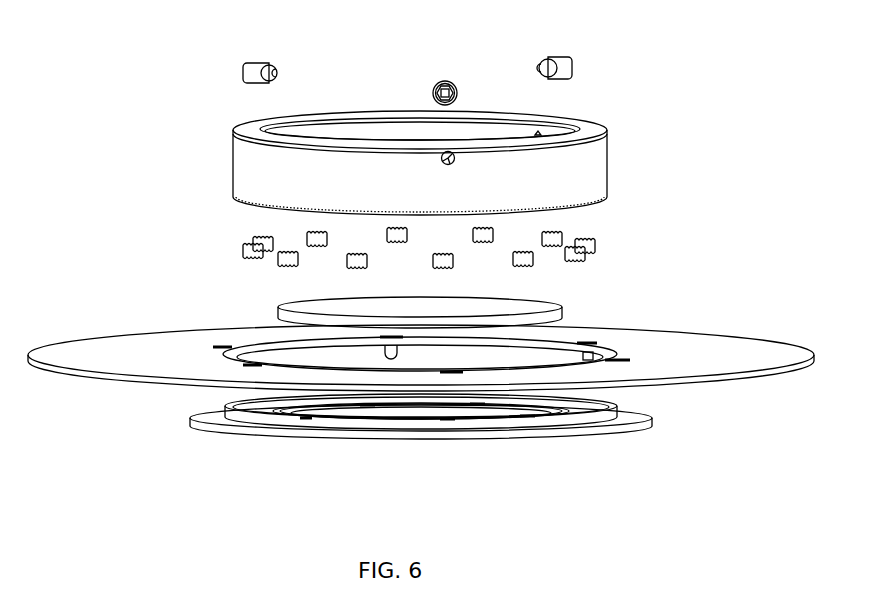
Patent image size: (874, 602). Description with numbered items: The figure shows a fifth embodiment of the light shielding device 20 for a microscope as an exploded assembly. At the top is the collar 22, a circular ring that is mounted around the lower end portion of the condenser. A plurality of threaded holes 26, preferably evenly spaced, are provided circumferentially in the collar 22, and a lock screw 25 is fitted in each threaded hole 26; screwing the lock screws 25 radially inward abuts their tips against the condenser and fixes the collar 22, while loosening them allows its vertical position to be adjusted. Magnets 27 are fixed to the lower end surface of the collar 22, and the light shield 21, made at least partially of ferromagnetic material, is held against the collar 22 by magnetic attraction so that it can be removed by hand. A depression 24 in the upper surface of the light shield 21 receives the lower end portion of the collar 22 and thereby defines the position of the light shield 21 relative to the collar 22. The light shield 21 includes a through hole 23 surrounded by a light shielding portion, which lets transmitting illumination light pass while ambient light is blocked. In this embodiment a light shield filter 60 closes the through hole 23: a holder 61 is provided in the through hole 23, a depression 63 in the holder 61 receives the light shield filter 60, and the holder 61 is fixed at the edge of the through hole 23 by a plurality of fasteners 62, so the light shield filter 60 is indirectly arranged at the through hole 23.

The light shielding device 20 is at (356, 37).
The light shield 21 is at (727, 352).
The collar 22 is at (273, 175).
The through hole 23 is at (537, 355).
The depression 24 is at (260, 410).
The lock screw 25 is at (562, 66).
The threaded hole 26 is at (453, 158).
The magnet 27 is at (552, 240).
The light shield filter 60 is at (337, 309).
The holder 61 is at (200, 422).
The fastener 62 is at (590, 356).
The depression 63 is at (325, 410).